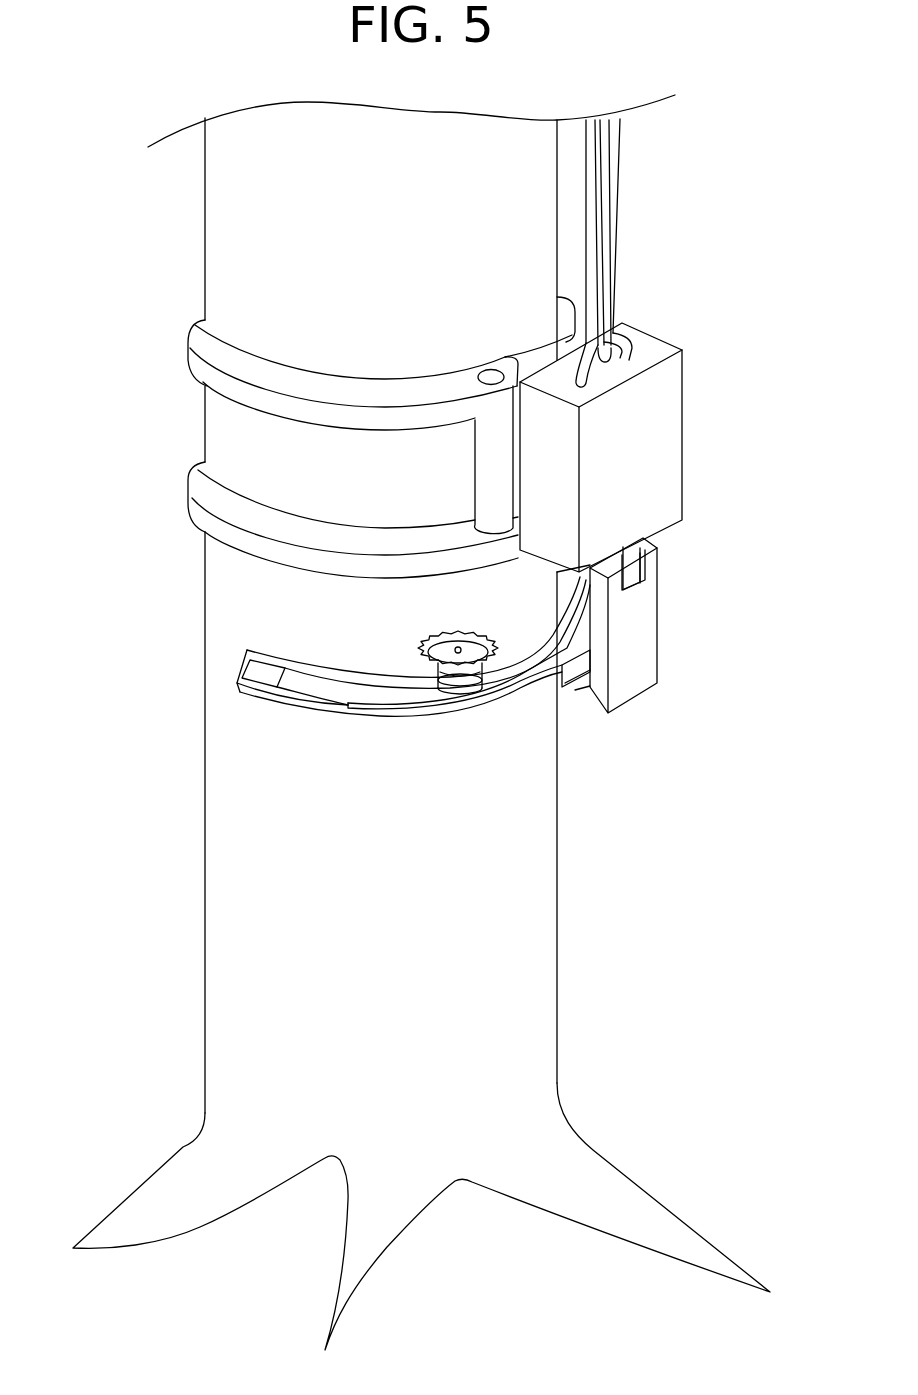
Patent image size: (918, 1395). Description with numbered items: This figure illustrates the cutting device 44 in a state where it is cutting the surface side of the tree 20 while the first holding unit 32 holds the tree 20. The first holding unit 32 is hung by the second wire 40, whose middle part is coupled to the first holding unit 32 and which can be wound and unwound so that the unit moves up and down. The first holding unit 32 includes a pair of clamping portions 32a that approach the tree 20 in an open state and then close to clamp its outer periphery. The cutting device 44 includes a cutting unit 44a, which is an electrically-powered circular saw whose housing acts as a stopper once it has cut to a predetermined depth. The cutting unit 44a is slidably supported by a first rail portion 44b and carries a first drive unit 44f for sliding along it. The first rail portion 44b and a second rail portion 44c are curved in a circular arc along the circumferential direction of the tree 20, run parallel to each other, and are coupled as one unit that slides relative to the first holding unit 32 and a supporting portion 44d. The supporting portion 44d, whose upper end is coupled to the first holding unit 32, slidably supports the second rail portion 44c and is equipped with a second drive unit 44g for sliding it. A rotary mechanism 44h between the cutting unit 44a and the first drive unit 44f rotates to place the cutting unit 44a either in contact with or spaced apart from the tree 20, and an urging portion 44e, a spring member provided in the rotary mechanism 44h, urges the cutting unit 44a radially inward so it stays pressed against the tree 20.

The tree 20 is at (203, 783).
The first holding unit 32 is at (670, 407).
The clamping portions 32a is at (268, 377).
The second wire 40 is at (617, 190).
The cutting device 44 is at (508, 684).
The cutting unit 44a is at (450, 645).
The first rail portion 44b is at (280, 668).
The second rail portion 44c is at (350, 706).
The supporting portion 44d is at (642, 640).
The urging portion 44e is at (483, 693).
The first drive unit 44f is at (467, 688).
The second drive unit 44g is at (582, 697).
The rotary mechanism 44h is at (447, 697).